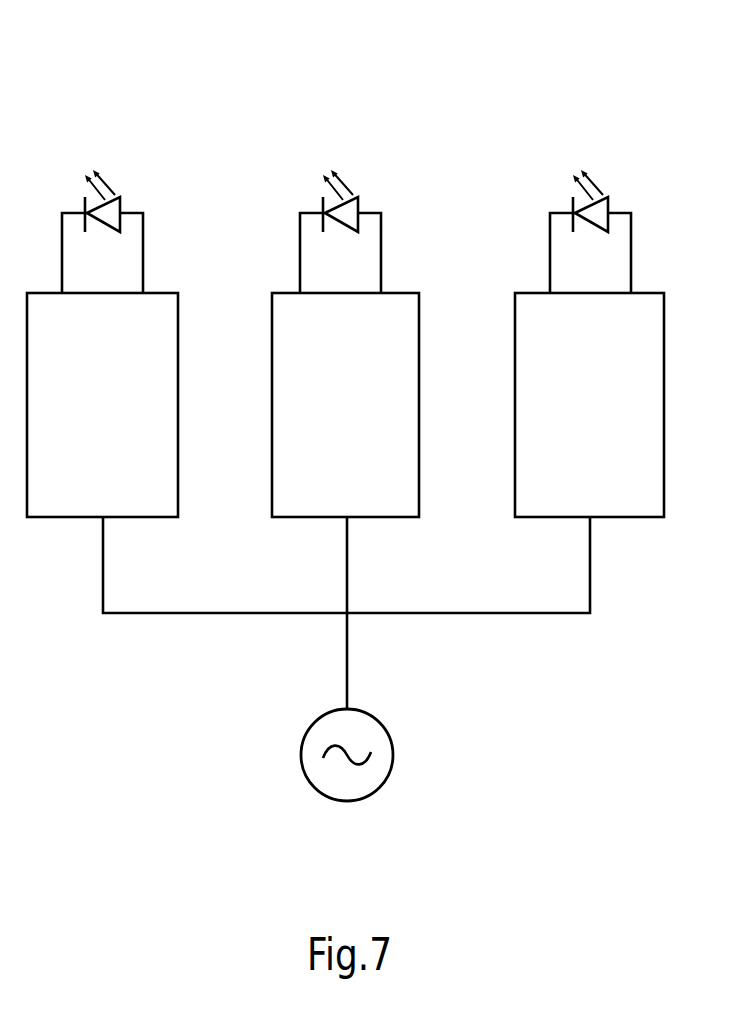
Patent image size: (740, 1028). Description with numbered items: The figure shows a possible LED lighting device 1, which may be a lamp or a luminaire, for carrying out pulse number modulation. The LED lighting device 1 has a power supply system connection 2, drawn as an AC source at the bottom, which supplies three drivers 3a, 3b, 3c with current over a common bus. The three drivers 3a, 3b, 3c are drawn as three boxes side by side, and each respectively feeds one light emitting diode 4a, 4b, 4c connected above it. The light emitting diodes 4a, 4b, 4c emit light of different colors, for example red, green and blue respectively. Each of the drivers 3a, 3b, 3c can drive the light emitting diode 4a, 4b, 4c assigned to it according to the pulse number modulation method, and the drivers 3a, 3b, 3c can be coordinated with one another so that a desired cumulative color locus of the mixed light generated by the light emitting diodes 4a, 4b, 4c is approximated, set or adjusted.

The LED lighting device 1 is at (503, 141).
The power supply system connection 2 is at (393, 747).
The driver 3a is at (162, 340).
The driver 3b is at (398, 337).
The driver 3c is at (642, 340).
The light emitting diode 4a is at (127, 205).
The light emitting diode 4b is at (365, 219).
The light emitting diode 4c is at (615, 219).